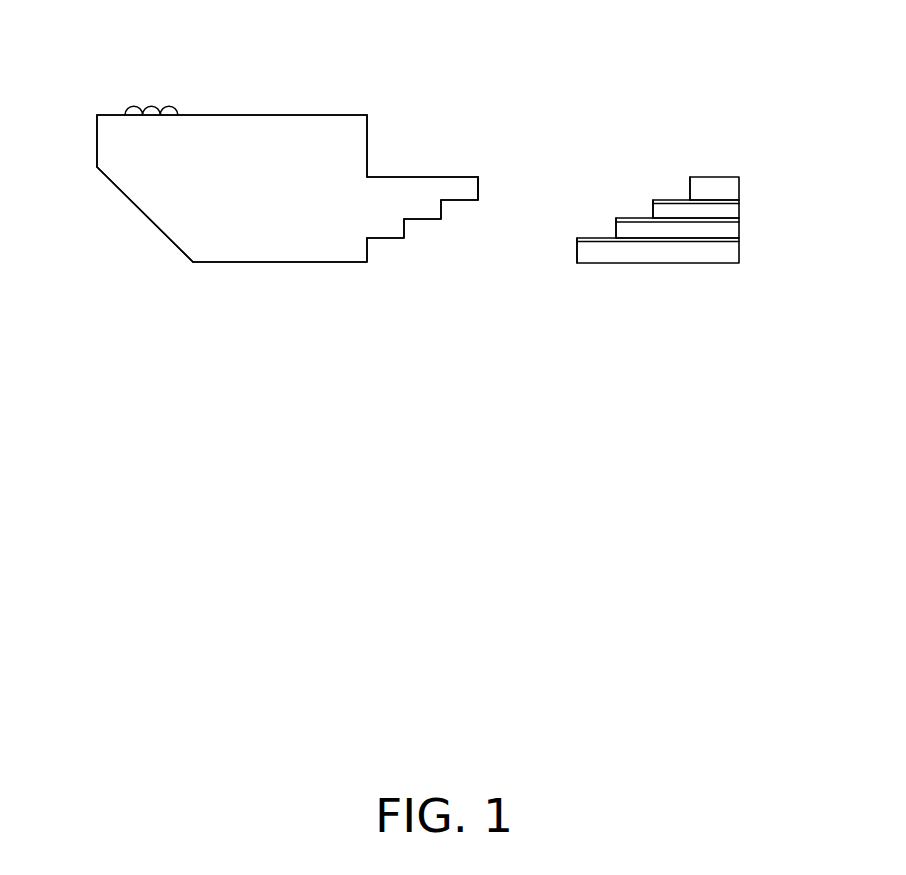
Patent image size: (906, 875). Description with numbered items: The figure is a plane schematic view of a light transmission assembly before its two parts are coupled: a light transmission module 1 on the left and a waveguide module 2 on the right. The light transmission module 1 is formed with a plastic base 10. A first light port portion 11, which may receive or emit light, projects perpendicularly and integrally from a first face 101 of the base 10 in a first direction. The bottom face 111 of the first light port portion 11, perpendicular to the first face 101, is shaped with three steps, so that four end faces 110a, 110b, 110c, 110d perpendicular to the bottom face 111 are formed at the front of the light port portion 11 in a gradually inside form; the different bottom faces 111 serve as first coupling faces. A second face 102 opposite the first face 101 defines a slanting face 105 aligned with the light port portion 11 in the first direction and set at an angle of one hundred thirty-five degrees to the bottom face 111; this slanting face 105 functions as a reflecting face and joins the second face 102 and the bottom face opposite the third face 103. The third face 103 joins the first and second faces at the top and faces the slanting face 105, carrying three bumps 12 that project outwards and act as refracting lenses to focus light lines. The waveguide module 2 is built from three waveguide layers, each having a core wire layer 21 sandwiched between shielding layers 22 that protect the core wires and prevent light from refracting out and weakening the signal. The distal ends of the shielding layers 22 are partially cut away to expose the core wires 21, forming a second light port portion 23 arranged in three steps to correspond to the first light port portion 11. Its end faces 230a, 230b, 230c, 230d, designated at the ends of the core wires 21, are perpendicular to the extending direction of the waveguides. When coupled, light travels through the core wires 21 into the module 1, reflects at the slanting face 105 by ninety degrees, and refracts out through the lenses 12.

The light transmission module 1 is at (287, 152).
The plastic base 10 is at (240, 148).
The first face 101 is at (367, 147).
The second face 102 is at (97, 141).
The third face 103 is at (202, 113).
The slanting face 105 is at (142, 217).
The first light port portion 11 is at (398, 187).
The bottom face 111 is at (460, 194).
The end face 110a is at (482, 187).
The end face 110b is at (443, 210).
The end face 110c is at (405, 227).
The end face 110d is at (370, 252).
The bumps 12 is at (128, 112).
The waveguide module 2 is at (658, 226).
The core wire layer 21 is at (717, 202).
The shielding layers 22 is at (728, 193).
The second light port portion 23 is at (672, 228).
The end face 230a is at (690, 188).
The end face 230b is at (653, 209).
The end face 230c is at (616, 228).
The end face 230d is at (577, 245).